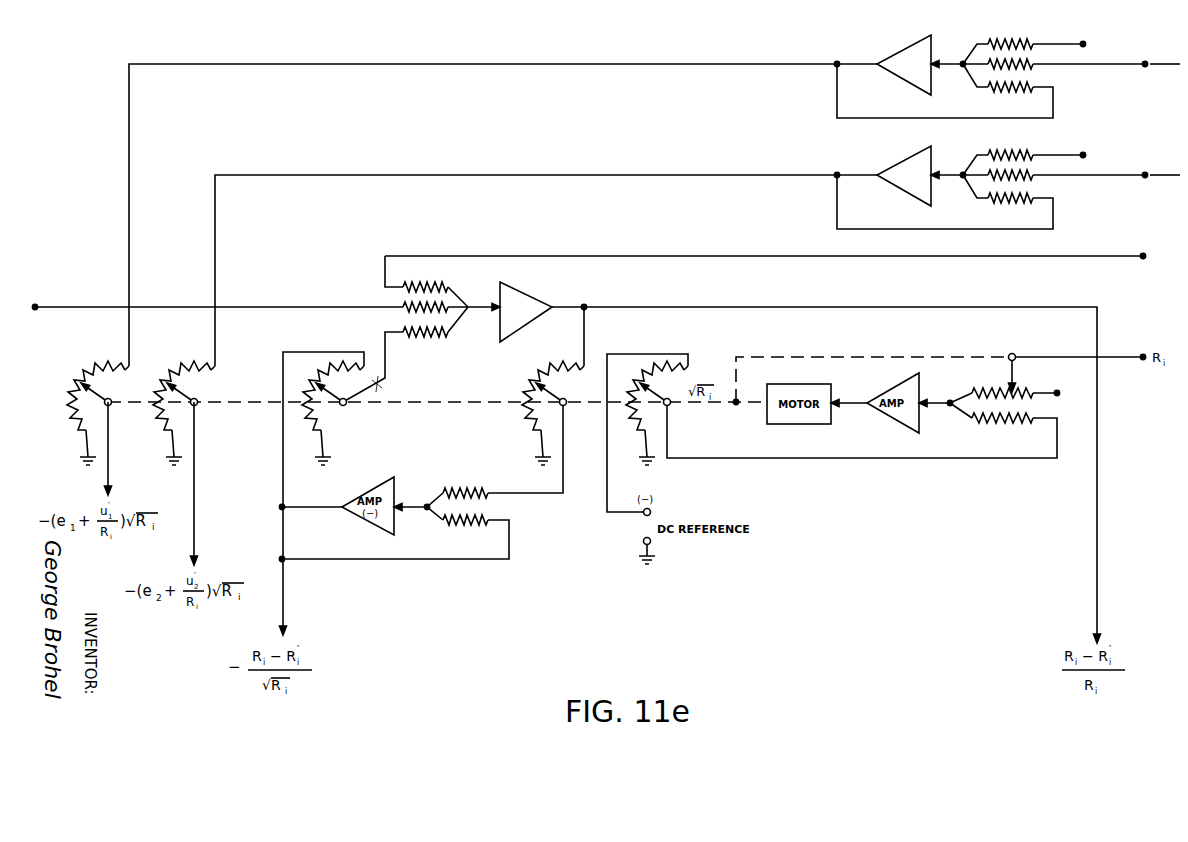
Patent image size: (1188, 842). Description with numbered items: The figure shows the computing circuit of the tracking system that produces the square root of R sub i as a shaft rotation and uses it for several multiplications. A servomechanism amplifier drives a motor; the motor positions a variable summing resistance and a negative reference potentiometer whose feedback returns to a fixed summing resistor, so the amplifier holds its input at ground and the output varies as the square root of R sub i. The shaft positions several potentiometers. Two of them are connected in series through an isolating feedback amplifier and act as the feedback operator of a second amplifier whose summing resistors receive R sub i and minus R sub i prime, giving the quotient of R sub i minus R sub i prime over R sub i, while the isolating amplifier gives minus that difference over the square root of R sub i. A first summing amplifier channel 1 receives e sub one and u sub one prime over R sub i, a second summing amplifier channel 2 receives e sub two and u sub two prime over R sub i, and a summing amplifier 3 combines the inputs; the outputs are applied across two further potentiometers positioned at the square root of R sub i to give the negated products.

The first input amplifier channel (e1, u1'/Ri) 1 is at (654, 199).
The second input amplifier channel (e2, u2'/Ri) 2 is at (697, 255).
The summing amplifier AMP(+) with input resistors 3 is at (598, 446).